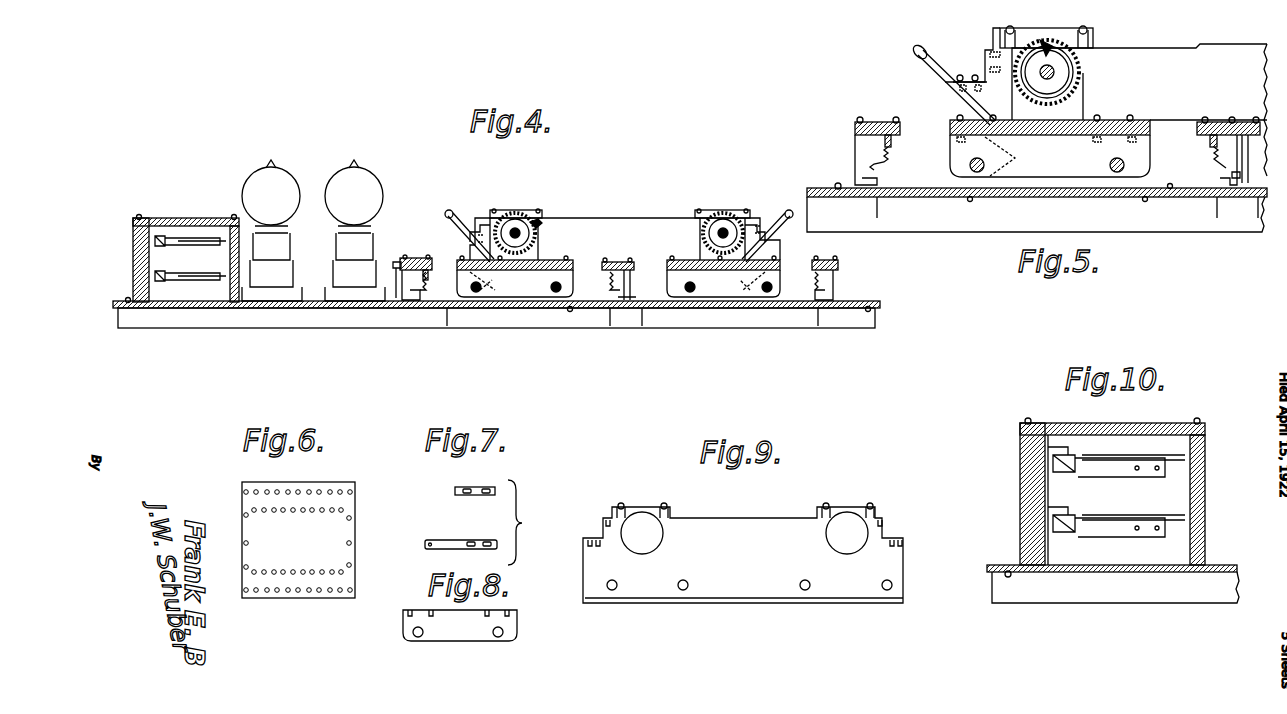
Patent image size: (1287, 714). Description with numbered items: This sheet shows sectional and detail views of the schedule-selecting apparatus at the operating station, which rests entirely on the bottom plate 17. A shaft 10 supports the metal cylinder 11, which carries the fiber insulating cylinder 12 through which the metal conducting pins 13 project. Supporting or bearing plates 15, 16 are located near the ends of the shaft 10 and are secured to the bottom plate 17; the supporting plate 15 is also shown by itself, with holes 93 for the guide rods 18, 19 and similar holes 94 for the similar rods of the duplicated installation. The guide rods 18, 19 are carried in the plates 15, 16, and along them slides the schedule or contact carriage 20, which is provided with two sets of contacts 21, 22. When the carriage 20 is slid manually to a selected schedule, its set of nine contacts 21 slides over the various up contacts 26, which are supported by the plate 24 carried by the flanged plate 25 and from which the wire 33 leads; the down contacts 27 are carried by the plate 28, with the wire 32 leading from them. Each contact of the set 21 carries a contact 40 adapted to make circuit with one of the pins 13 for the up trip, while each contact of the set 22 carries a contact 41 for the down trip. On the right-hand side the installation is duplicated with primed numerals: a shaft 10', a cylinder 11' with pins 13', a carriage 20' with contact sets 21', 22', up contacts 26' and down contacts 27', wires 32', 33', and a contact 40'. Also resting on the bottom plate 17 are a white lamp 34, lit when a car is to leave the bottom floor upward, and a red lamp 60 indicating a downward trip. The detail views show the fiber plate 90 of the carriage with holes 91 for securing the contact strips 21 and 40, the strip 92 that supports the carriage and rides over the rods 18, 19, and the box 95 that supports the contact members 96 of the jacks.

In FIG. 4, the shaft 10 is at (543, 240).
In FIG. 5, the shaft 10 is at (1082, 69).
In FIG. 4, the shaft 10' is at (753, 214).
In FIG. 4, the metal cylinder 11 is at (548, 224).
In FIG. 5, the metal cylinder 11 is at (1066, 65).
In FIG. 4, the metal cylinder 11' is at (720, 211).
In FIG. 4, the fiber insulating cylinder 12 is at (530, 214).
In FIG. 4, the metal conducting pins 13 is at (507, 211).
In FIG. 5, the metal conducting pins 13 is at (994, 52).
In FIG. 4, the metal conducting pins 13' is at (749, 206).
In FIG. 4, the supporting plate 15 is at (690, 217).
In FIG. 9, the supporting plate 15 is at (783, 518).
In FIG. 5, the supporting plate 16 is at (1200, 48).
In FIG. 4, the bottom plate 17 is at (864, 301).
In FIG. 5, the bottom plate 17 is at (812, 187).
In FIG. 10, the bottom plate 17 is at (1228, 565).
In FIG. 4, the guide rod 18 is at (556, 293).
In FIG. 5, the guide rod 18 is at (1117, 171).
In FIG. 4, the guide rod 19 is at (476, 293).
In FIG. 5, the guide rod 19 is at (972, 170).
In FIG. 4, the schedule carriage 20 is at (515, 283).
In FIG. 5, the schedule carriage 20 is at (1030, 110).
In FIG. 4, the schedule carriage 20' is at (723, 283).
In FIG. 4, the contacts 21 is at (501, 255).
In FIG. 5, the contacts 21 is at (1031, 118).
In FIG. 7, the contacts 21 is at (461, 533).
In FIG. 4, the contacts 21' is at (716, 244).
In FIG. 4, the contacts 22 is at (612, 251).
In FIG. 5, the contacts 22 is at (1220, 108).
In FIG. 4, the contacts 22' is at (817, 269).
In FIG. 4, the plate 24 is at (407, 258).
In FIG. 5, the plate 24 is at (875, 122).
In FIG. 4, the flanged plate 25 is at (395, 275).
In FIG. 4, the up contacts 26 is at (438, 280).
In FIG. 5, the up contacts 26 is at (899, 152).
In FIG. 4, the up contacts 26' is at (635, 265).
In FIG. 4, the down contacts 27 is at (590, 282).
In FIG. 5, the down contacts 27 is at (1194, 151).
In FIG. 4, the down contacts 27' is at (800, 282).
In FIG. 4, the plate 28 is at (630, 261).
In FIG. 5, the plate 28 is at (1245, 128).
In FIG. 4, the wire 32 is at (604, 333).
In FIG. 5, the wire 32 is at (1192, 213).
In FIG. 4, the wire 32' is at (800, 332).
In FIG. 4, the wire 33 is at (442, 328).
In FIG. 5, the wire 33 is at (900, 212).
In FIG. 4, the wire 33' is at (664, 328).
In FIG. 5, the wire 33' is at (1240, 231).
In FIG. 4, the white lamp 34 is at (290, 190).
In FIG. 4, the contact 40 is at (469, 227).
In FIG. 7, the contact 40 is at (497, 478).
In FIG. 4, the contact 40' is at (730, 236).
In FIG. 4, the contact 41 is at (538, 225).
In FIG. 4, the red lamp 60 is at (374, 190).
In FIG. 6, the fiber plate 90 is at (335, 527).
In FIG. 6, the holes 91 is at (344, 490).
In FIG. 8, the strip 92 is at (472, 632).
In FIG. 9, the holes 93 is at (681, 583).
In FIG. 9, the holes 94 is at (885, 583).
In FIG. 4, the box 95 is at (133, 260).
In FIG. 10, the box 95 is at (1020, 480).
In FIG. 4, the contact members 96 is at (164, 246).
In FIG. 10, the contact members 96 is at (1068, 462).